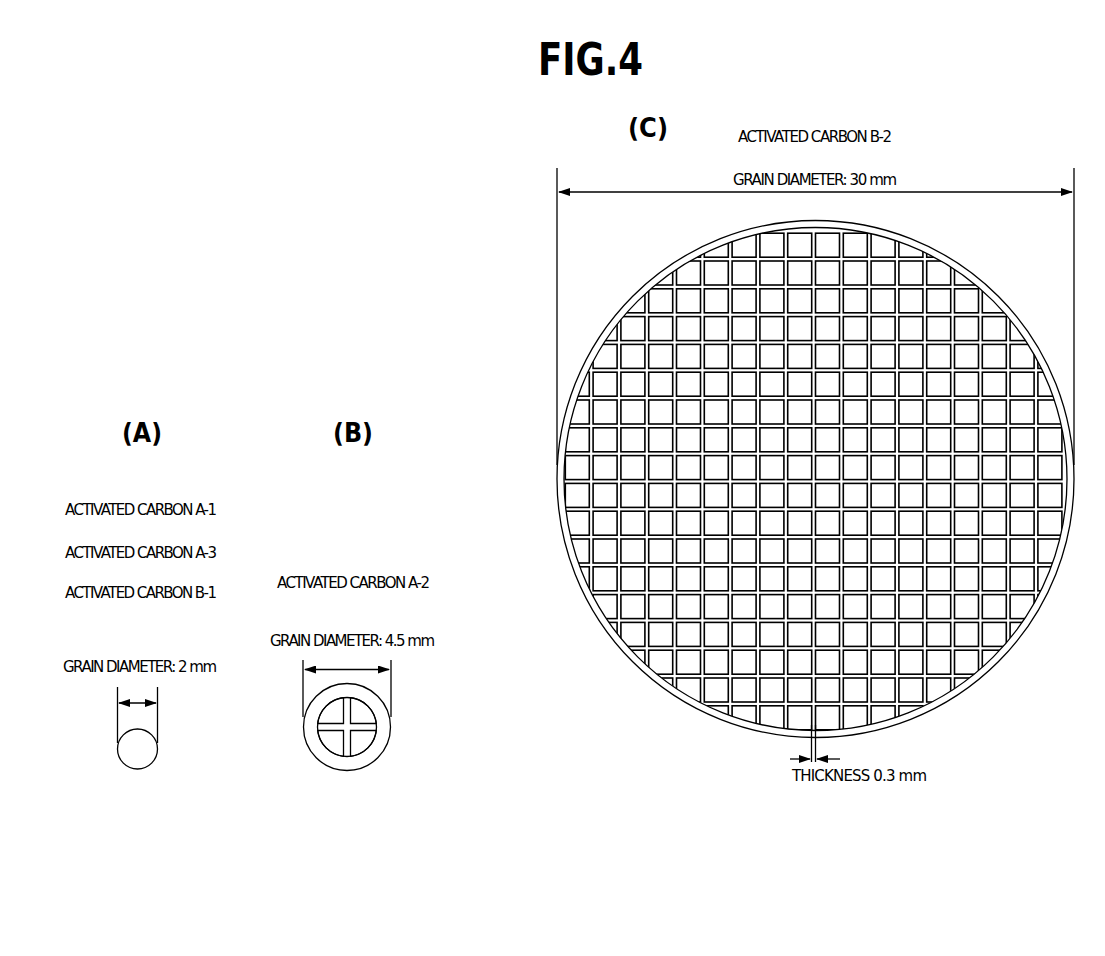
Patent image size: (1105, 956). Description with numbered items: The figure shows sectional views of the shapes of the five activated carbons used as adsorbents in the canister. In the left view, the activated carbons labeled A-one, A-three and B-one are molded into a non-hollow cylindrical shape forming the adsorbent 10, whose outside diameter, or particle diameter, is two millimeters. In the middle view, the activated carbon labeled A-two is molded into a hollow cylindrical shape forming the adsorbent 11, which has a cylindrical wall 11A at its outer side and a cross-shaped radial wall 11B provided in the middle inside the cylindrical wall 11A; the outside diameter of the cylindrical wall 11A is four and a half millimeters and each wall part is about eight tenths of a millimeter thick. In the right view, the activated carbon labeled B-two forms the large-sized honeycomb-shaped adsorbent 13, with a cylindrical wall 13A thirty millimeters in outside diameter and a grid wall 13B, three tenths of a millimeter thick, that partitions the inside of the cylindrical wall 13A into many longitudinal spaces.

The adsorbent 10 is at (142, 752).
The adsorbent 11 is at (394, 720).
The cylindrical wall 11A is at (320, 752).
The cross-shaped radial wall 11B is at (365, 732).
The adsorbent 13 is at (991, 275).
The cylindrical wall 13A is at (1020, 633).
The grid wall 13B is at (955, 665).